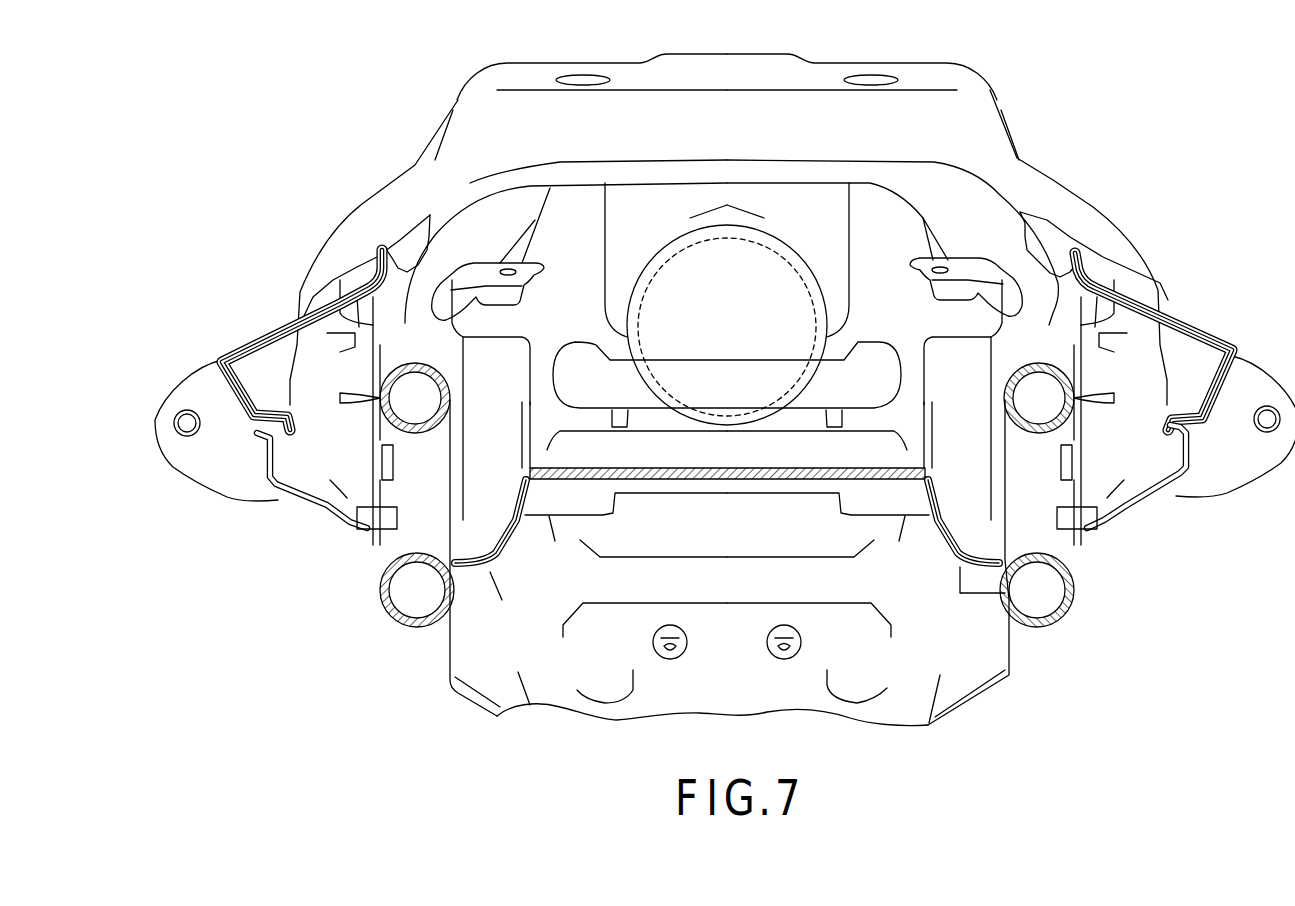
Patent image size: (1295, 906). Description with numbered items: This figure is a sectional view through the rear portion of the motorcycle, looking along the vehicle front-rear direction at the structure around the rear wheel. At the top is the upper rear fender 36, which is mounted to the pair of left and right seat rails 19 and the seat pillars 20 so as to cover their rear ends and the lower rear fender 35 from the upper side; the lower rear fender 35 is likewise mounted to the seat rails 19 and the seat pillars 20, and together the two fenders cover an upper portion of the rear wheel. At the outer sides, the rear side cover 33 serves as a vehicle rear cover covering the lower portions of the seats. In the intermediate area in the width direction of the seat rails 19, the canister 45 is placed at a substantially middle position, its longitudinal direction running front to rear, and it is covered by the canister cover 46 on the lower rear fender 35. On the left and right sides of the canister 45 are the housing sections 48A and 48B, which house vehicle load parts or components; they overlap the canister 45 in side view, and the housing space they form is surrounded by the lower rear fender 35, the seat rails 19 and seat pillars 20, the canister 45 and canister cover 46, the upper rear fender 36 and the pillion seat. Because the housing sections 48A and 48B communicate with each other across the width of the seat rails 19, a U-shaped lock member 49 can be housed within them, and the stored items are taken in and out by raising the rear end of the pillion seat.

The seat rails 19 is at (407, 300).
The seat pillars 20 is at (380, 548).
The rear side cover 33 is at (266, 332).
The lower rear fender 35 is at (747, 480).
The upper rear fender 36 is at (745, 72).
The canister 45 is at (682, 250).
The canister cover 46 is at (788, 247).
The housing section 48A is at (563, 317).
The housing section 48B is at (893, 320).
The U-shaped lock member 49 is at (617, 395).